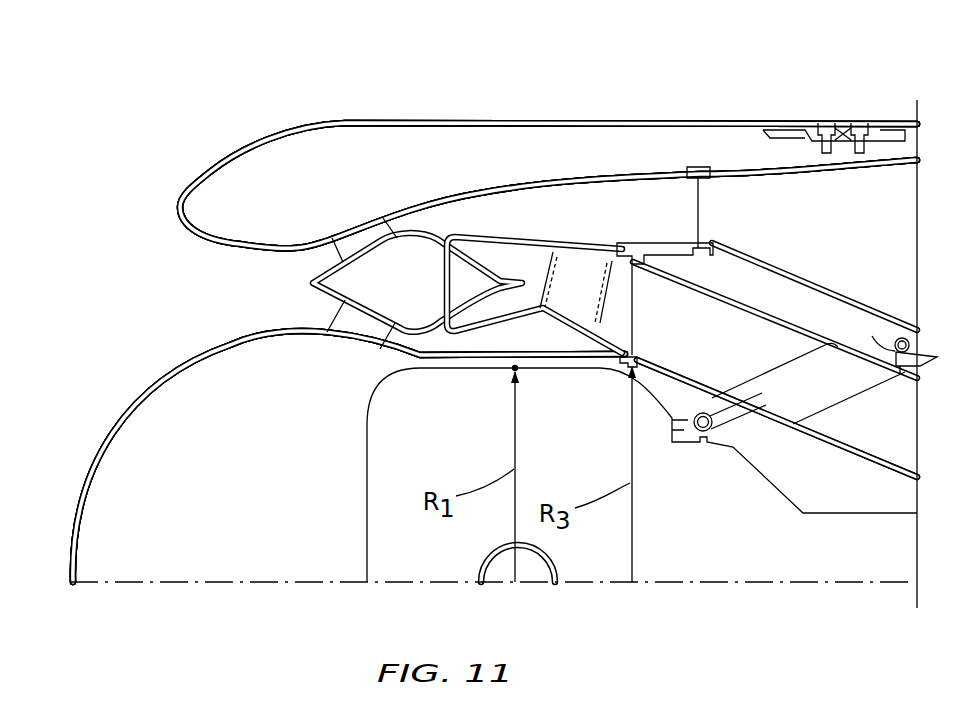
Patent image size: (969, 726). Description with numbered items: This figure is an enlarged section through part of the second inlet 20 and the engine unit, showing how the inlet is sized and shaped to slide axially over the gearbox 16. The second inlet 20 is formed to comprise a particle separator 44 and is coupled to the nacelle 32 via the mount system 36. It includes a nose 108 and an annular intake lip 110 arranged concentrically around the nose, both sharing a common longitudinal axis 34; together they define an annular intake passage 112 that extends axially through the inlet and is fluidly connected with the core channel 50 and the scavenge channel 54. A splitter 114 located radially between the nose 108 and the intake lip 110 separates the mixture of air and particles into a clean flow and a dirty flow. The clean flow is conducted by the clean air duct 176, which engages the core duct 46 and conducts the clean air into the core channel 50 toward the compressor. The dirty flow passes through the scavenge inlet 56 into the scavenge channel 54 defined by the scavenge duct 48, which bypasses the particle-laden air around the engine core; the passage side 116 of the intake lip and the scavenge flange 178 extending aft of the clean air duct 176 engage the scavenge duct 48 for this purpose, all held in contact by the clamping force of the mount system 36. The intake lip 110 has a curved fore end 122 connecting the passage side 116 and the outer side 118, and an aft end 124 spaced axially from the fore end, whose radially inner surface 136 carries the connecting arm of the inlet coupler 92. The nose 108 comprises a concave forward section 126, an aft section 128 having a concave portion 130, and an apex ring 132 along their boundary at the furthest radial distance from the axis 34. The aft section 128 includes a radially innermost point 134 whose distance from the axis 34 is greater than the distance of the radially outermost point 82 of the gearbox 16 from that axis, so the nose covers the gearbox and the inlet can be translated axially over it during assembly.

The intake lip 110 is at (192, 183).
The outer side 118 is at (335, 119).
The curved fore end 122 is at (178, 207).
The radially inner surface 136 is at (736, 133).
The nacelle 32 is at (897, 121).
The aft section 128 is at (366, 360).
The concave forward section 126 is at (135, 400).
The apex ring 132 is at (280, 330).
The nose 108 is at (74, 530).
The second inlet 20 is at (70, 562).
The splitter 114 is at (406, 270).
The clean air duct 176 is at (522, 240).
The scavenge duct 48 is at (797, 262).
The scavenge flange 178 is at (683, 252).
The core duct 46 is at (653, 372).
The radially innermost point 134 is at (620, 370).
The gearbox 16 is at (412, 483).
The axis 34 is at (235, 580).
The passage side 116 is at (308, 257).
The concave portion 130 is at (346, 346).
The particle separator 44 is at (150, 272).
The annular intake passage 112 is at (215, 292).
The radially outermost point 82 is at (514, 370).
The scavenge inlet 56 is at (690, 224).
The scavenge channel 54 is at (748, 214).
The core channel 50 is at (762, 358).
The aft end 124 is at (797, 121).
The mount system 36 is at (848, 121).
The inlet coupler 92 is at (798, 141).